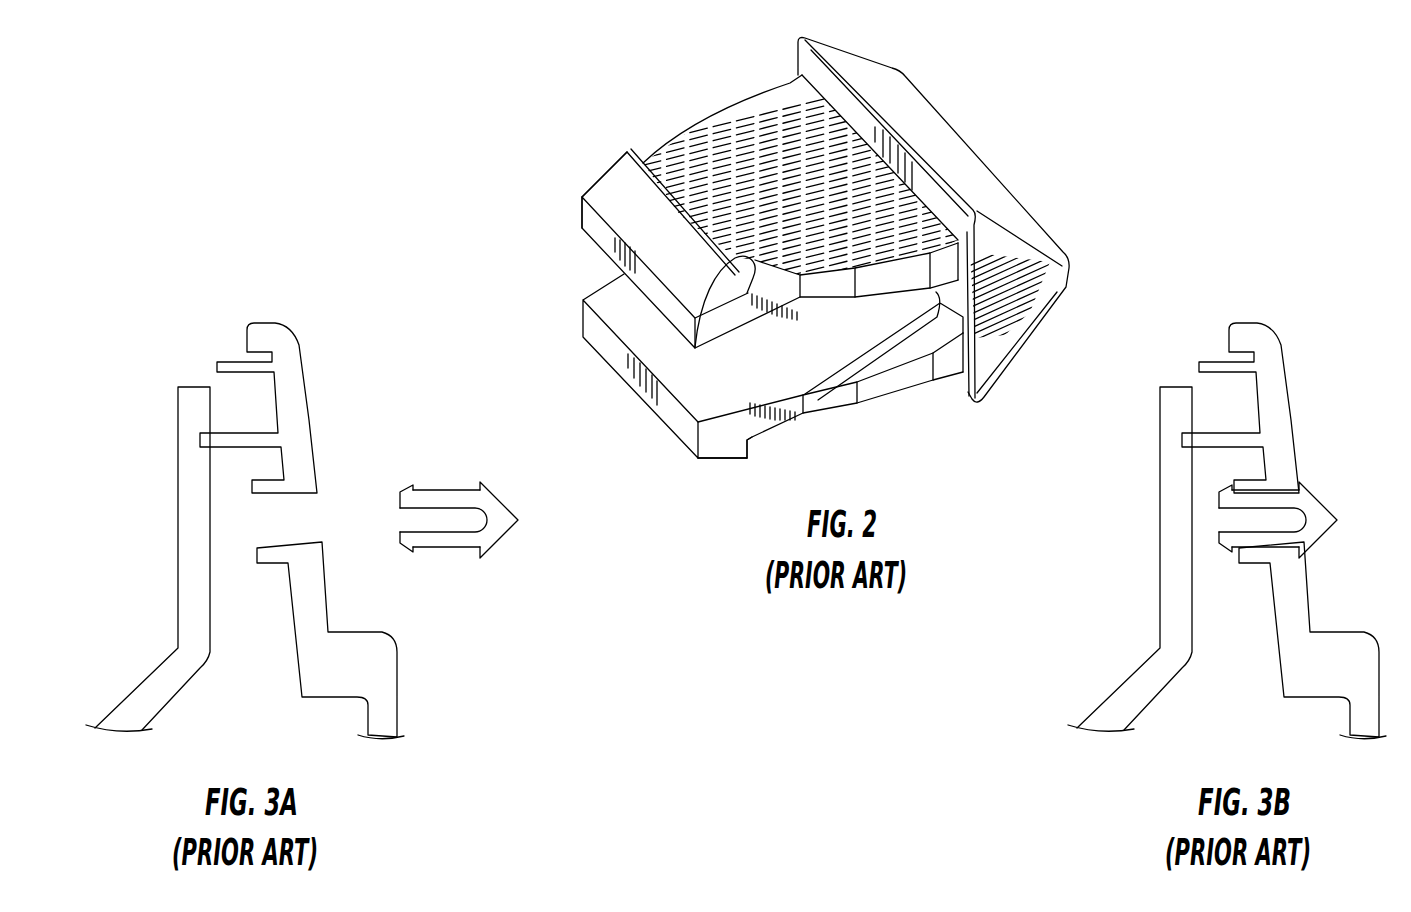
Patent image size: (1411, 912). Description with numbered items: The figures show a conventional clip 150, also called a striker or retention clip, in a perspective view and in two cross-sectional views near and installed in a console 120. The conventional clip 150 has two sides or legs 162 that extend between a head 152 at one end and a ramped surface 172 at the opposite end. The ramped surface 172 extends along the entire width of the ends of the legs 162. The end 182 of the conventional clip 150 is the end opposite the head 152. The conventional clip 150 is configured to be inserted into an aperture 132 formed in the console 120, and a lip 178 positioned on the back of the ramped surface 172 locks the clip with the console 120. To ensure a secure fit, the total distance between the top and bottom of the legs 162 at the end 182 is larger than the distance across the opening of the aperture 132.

In FIG. 3A, the console 120 is at (294, 320).
In FIG. 3B, the console 120 is at (1274, 320).
In FIG. 3A, the aperture 132 is at (310, 508).
In FIG. 3B, the aperture 132 is at (1272, 490).
In FIG. 2, the conventional clip 150 is at (998, 120).
In FIG. 3A, the conventional clip 150 is at (512, 550).
In FIG. 3B, the conventional clip 150 is at (1327, 548).
In FIG. 2, the head 152 is at (1020, 351).
In FIG. 3A, the head 152 is at (495, 487).
In FIG. 3B, the head 152 is at (1312, 490).
In FIG. 2, the legs 162 is at (733, 140).
In FIG. 3A, the legs 162 is at (452, 547).
In FIG. 3B, the legs 162 is at (1262, 553).
In FIG. 2, the ramped surface 172 is at (607, 172).
In FIG. 3A, the ramped surface 172 is at (414, 552).
In FIG. 3B, the ramped surface 172 is at (1228, 550).
In FIG. 2, the lip 178 is at (708, 290).
In FIG. 2, the end 182 is at (585, 233).